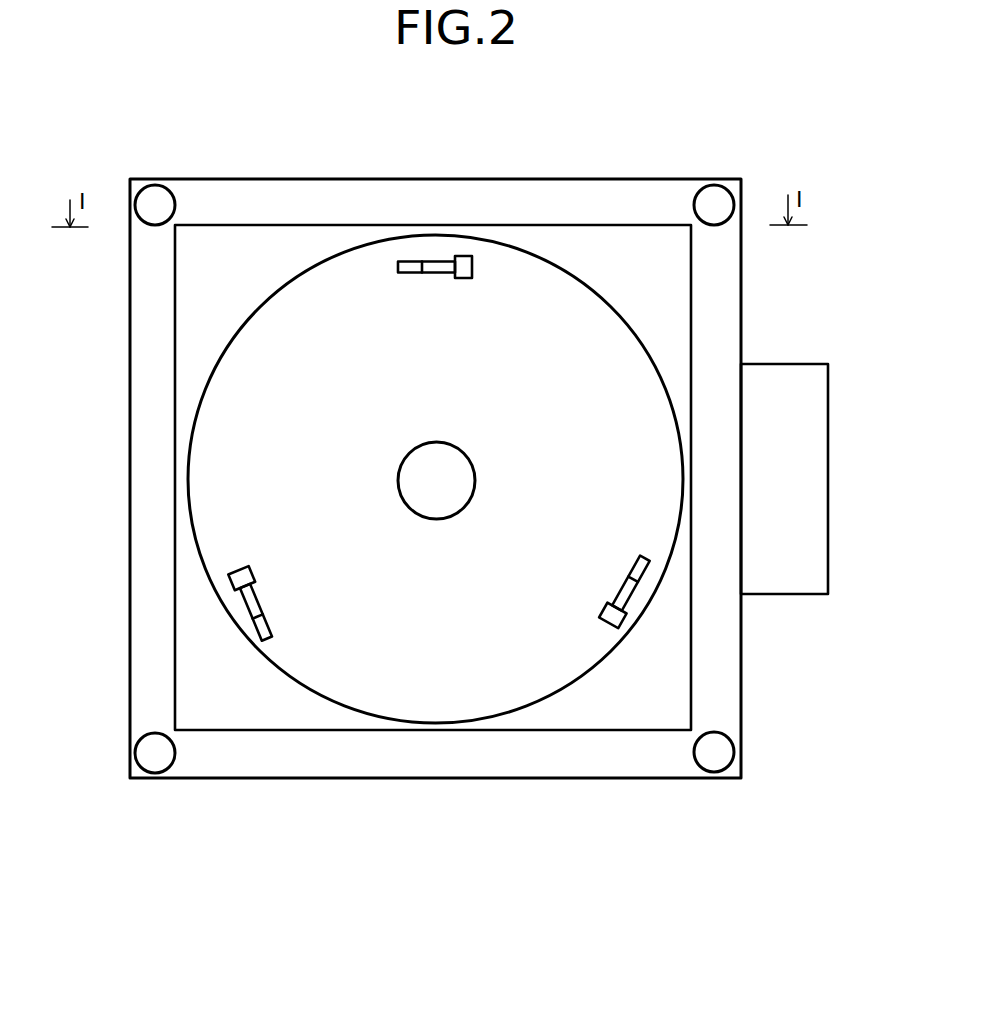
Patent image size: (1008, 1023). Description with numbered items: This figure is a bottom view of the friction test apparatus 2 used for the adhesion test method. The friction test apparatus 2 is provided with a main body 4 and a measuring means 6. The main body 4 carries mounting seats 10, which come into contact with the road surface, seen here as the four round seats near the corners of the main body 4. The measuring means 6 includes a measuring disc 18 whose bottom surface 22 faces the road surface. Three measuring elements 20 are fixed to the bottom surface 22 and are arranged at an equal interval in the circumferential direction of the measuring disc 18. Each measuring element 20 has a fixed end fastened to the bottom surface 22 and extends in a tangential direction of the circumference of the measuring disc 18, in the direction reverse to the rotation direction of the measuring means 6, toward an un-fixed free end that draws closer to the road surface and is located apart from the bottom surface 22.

The friction test apparatus 2 is at (872, 154).
The main body 4 is at (741, 282).
The measuring means 6 is at (570, 272).
The mounting seat 10 is at (155, 203).
The measuring disc 18 is at (235, 372).
The measuring element 20 is at (440, 266).
The bottom surface 22 is at (252, 473).